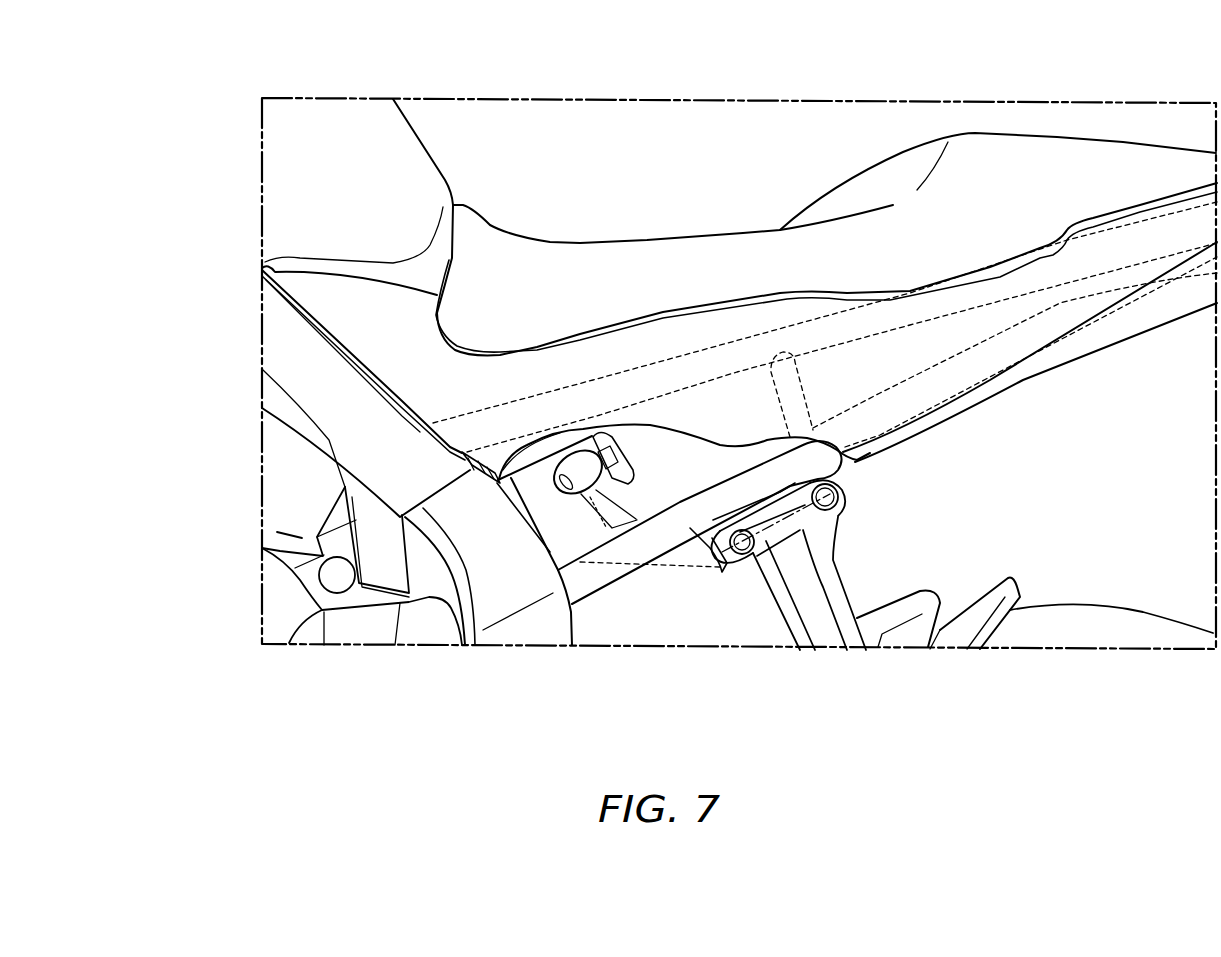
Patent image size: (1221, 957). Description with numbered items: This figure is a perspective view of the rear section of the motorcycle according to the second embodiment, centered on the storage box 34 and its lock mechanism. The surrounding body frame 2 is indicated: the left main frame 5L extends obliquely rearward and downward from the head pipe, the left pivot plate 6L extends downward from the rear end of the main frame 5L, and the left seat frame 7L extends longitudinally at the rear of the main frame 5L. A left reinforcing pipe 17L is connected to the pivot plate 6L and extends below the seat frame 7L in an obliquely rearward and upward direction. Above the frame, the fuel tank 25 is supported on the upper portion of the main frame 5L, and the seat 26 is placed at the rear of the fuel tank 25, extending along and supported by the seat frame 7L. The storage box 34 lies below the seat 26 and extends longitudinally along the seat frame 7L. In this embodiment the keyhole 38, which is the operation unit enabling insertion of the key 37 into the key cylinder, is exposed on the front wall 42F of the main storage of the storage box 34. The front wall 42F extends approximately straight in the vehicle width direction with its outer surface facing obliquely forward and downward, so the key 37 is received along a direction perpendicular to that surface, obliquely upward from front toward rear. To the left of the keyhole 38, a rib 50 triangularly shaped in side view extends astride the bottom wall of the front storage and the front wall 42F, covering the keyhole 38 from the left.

The body frame 2 is at (268, 405).
The fuel tank 25 is at (420, 140).
The seat 26 is at (743, 232).
The seat frame 7L is at (663, 357).
The main frame 5L is at (345, 442).
The pivot plate 6L is at (513, 583).
The rib 50 is at (640, 430).
The key 37 is at (580, 498).
The keyhole 38 is at (632, 428).
The front wall 42F is at (658, 497).
The storage box 34 is at (747, 606).
The reinforcing pipe 17L is at (847, 470).